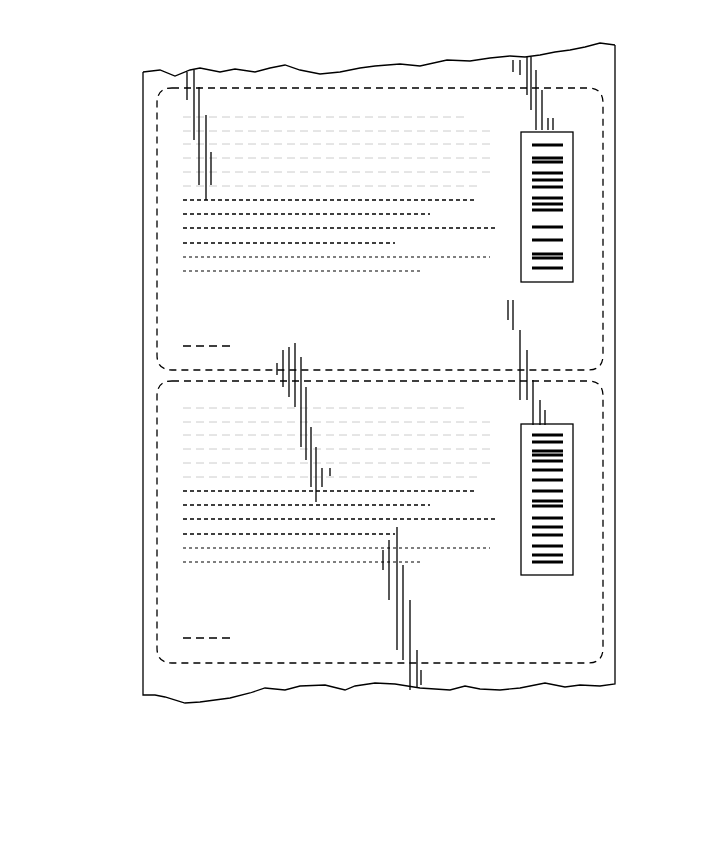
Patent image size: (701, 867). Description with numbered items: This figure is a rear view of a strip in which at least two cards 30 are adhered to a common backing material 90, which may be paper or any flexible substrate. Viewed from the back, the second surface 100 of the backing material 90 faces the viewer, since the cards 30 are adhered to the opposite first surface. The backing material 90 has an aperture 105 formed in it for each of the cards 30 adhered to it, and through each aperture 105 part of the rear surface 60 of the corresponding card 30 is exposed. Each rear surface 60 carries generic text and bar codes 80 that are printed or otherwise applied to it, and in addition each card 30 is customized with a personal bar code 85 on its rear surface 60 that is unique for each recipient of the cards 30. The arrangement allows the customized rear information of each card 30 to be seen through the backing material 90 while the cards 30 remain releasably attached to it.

The second surface 100 is at (379, 410).
The backing material 90 is at (615, 75).
The card 30 is at (128, 226).
The bar codes 80 is at (214, 295).
The aperture 105 is at (573, 162).
The personal bar code 85 is at (557, 224).
The rear surface 60 is at (575, 309).